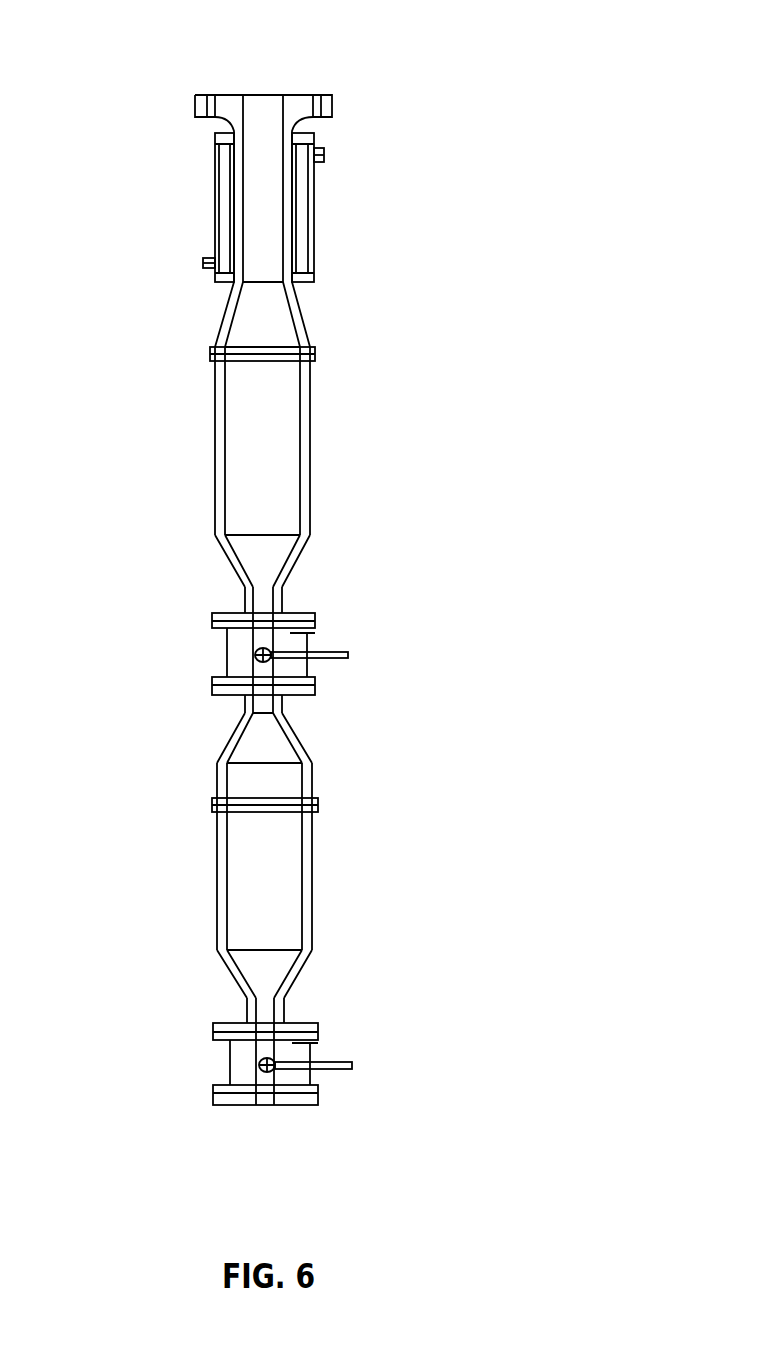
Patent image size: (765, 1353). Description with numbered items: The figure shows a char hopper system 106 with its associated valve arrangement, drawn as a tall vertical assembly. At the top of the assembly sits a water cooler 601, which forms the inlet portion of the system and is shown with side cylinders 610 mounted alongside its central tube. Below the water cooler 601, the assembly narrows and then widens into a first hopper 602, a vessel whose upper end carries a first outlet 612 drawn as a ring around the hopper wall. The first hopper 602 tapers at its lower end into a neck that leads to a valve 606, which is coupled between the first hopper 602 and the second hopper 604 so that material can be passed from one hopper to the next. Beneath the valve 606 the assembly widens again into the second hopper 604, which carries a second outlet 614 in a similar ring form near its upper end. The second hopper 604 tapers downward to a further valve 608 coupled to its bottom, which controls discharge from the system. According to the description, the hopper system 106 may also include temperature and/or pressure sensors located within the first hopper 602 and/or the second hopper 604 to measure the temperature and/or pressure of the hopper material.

The char hopper system 106 is at (387, 82).
The water cooler 601 is at (303, 185).
The heater cylinders 610 is at (310, 267).
The first hopper 602 is at (218, 397).
The first outlet 612 is at (317, 347).
The valve 606 is at (227, 647).
The second hopper 604 is at (218, 863).
The second outlet 614 is at (318, 798).
The valve 608 is at (230, 1063).